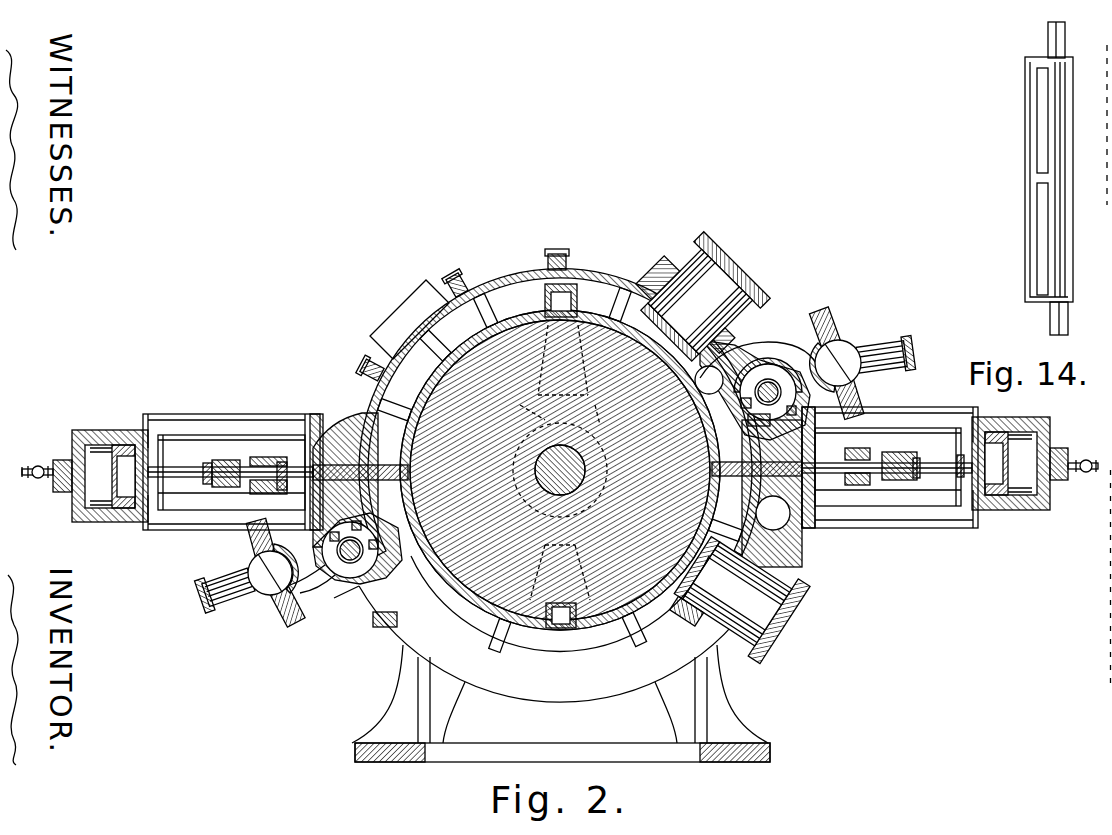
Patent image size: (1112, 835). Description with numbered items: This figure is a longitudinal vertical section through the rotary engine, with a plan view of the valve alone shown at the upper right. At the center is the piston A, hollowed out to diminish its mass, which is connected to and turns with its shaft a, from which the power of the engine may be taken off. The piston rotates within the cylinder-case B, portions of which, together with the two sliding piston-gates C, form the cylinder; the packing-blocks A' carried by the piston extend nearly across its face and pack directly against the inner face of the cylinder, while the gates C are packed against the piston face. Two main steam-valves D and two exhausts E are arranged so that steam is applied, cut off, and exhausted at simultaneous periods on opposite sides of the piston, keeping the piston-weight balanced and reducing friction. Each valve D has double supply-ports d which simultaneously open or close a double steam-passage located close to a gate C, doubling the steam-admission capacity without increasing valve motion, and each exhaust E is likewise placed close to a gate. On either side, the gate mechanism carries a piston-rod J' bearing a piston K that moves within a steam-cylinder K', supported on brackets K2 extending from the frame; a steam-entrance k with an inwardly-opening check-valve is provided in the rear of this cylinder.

In FIG. 2, the piston A is at (560, 470).
In FIG. 2, the packing-blocks A' is at (571, 449).
In FIG. 2, the shaft a is at (560, 470).
In FIG. 2, the cylinder-case B is at (454, 590).
In FIG. 2, the sliding piston-gates C is at (346, 455).
In FIG. 2, the main steam-valves D is at (770, 368).
In FIG. 14, the main steam-valves D is at (1036, 178).
In FIG. 2, the supply-ports d is at (372, 563).
In FIG. 14, the supply-ports d is at (1037, 128).
In FIG. 2, the exhausts E is at (770, 250).
In FIG. 2, the piston-rod J' is at (560, 467).
In FIG. 2, the piston K is at (560, 484).
In FIG. 2, the steam-cylinder K' is at (568, 469).
In FIG. 2, the brackets K2 is at (252, 412).
In FIG. 2, the steam-entrance k is at (1088, 475).